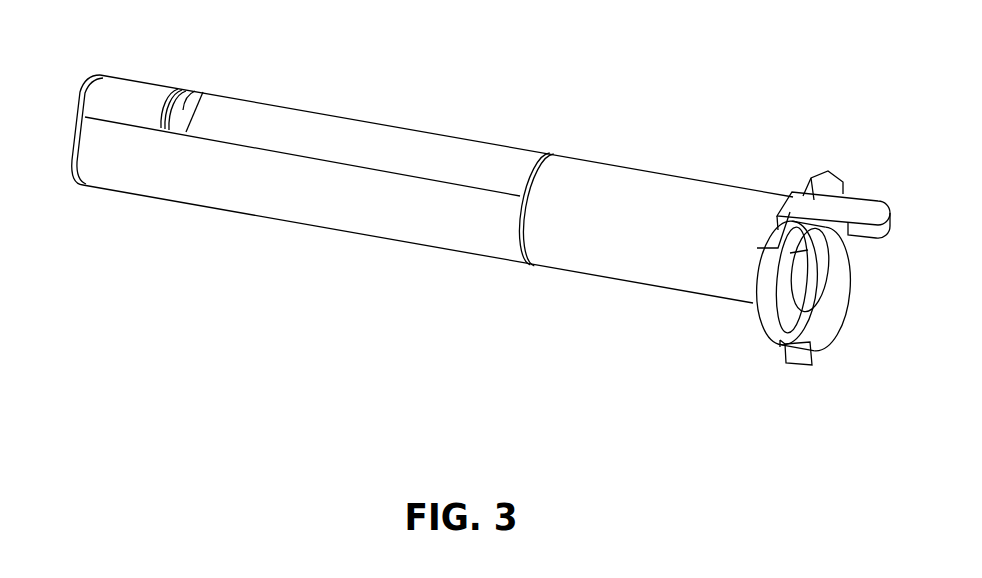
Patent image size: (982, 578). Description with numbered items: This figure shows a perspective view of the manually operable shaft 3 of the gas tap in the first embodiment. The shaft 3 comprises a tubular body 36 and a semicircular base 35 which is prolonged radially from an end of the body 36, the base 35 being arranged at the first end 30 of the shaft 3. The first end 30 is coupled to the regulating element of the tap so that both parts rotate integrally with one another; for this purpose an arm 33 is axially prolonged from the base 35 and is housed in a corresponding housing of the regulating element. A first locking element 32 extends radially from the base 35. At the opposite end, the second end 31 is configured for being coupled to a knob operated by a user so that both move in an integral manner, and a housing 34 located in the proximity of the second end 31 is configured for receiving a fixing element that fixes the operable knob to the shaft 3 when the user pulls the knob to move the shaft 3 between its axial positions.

The shaft 3 is at (486, 232).
The first end 30 is at (799, 298).
The second end 31 is at (72, 190).
The first locking element 32 is at (817, 350).
The arm 33 is at (850, 200).
The housing 34 is at (187, 107).
The semicircular base 35 is at (833, 283).
The tubular body 36 is at (500, 240).